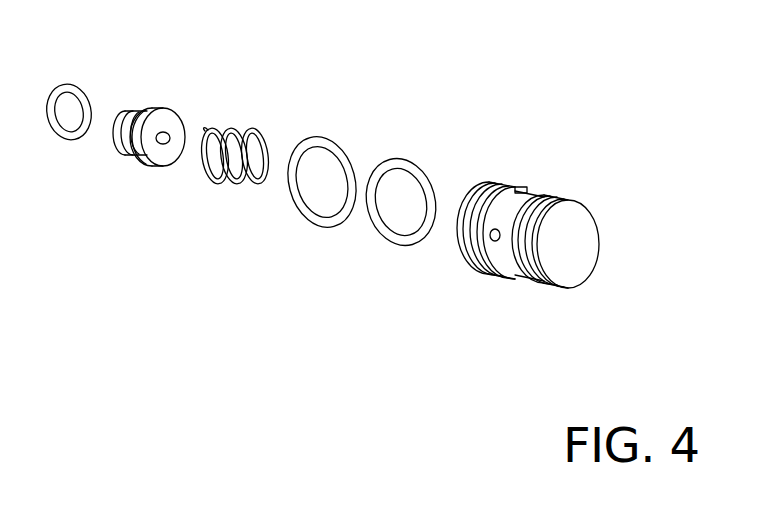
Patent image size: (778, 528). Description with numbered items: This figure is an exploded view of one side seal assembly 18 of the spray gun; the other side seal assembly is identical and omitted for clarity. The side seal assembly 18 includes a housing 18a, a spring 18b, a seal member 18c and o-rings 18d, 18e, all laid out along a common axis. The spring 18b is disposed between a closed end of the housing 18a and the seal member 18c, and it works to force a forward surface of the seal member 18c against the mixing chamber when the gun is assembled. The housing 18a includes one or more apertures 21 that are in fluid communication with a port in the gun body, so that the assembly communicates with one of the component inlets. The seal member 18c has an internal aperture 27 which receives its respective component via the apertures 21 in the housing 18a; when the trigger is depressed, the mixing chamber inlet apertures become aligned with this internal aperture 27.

The side seal assembly 18 is at (417, 105).
The housing 18a is at (528, 245).
The spring 18b is at (227, 183).
The seal member 18c is at (170, 163).
The o-ring 18d is at (308, 221).
The o-ring 18e is at (67, 140).
The aperture 21 is at (500, 230).
The internal aperture 27 is at (171, 134).